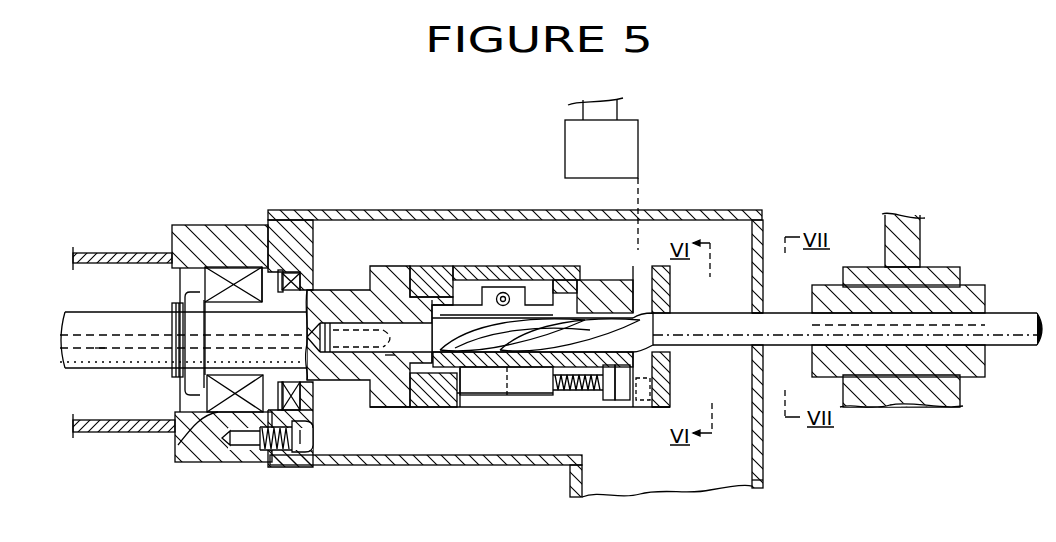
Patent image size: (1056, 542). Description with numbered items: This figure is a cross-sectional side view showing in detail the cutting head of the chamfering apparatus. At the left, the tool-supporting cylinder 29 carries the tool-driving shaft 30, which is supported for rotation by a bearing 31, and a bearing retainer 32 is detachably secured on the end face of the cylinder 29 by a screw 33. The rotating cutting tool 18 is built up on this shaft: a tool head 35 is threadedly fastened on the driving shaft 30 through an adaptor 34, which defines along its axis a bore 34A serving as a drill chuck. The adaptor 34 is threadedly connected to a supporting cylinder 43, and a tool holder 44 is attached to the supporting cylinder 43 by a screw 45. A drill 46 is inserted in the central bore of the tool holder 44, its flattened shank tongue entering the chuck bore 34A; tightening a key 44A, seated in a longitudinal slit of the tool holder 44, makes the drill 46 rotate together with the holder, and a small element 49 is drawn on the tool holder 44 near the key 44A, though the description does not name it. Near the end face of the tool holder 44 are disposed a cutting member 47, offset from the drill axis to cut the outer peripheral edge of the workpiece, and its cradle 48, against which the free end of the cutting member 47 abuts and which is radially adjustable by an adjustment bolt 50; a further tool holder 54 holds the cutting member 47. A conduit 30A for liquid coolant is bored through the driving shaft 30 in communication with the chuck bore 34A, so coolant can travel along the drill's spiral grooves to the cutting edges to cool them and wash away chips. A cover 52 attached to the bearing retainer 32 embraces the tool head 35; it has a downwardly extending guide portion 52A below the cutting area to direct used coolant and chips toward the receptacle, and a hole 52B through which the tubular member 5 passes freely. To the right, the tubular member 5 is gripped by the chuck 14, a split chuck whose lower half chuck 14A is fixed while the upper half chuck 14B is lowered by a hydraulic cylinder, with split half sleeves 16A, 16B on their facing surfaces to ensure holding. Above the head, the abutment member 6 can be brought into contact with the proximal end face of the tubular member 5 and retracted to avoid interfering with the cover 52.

The tubular member 5 is at (1023, 318).
The abutment member 6 is at (588, 155).
The chuck 14 is at (940, 262).
The lower half chuck 14A is at (907, 400).
The upper half chuck 14B is at (865, 272).
The split half sleeve 16A is at (978, 367).
The split half sleeve 16B is at (982, 288).
The cutting tool 18 is at (178, 223).
The tool-supporting cylinder 29 is at (128, 433).
The tool-driving shaft 30 is at (93, 320).
The conduit 30A is at (100, 350).
The bearing 31 is at (223, 407).
The bearing retainer 32 is at (288, 232).
The screw 33 is at (263, 440).
The adaptor 34 is at (337, 370).
The bore 34A is at (390, 367).
The tool head 35 is at (453, 412).
The supporting cylinder 43 is at (442, 277).
The tool holder 44 is at (428, 290).
The key 44A is at (465, 308).
The screw 45 is at (573, 392).
The drill 46 is at (508, 362).
The cutting member 47 is at (638, 273).
The cradle 48 is at (672, 387).
The pin 49 is at (508, 294).
The adjustment bolt 50 is at (638, 407).
The cover 52 is at (750, 208).
The guide portion 52A is at (767, 460).
The hole 52B is at (765, 310).
The tool holder 54 is at (658, 407).